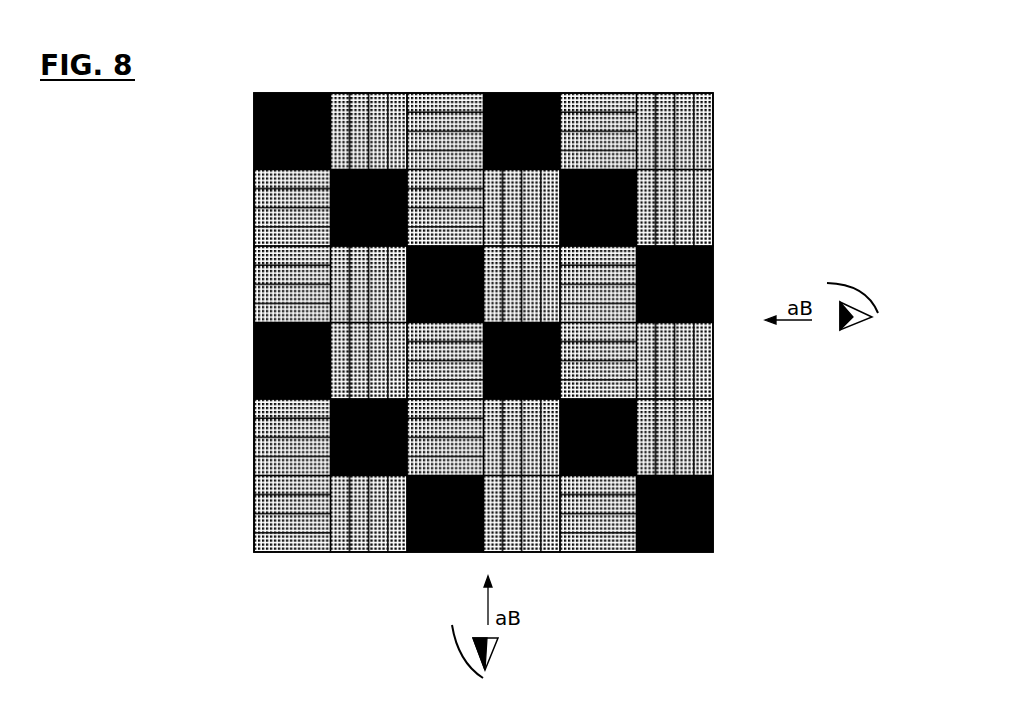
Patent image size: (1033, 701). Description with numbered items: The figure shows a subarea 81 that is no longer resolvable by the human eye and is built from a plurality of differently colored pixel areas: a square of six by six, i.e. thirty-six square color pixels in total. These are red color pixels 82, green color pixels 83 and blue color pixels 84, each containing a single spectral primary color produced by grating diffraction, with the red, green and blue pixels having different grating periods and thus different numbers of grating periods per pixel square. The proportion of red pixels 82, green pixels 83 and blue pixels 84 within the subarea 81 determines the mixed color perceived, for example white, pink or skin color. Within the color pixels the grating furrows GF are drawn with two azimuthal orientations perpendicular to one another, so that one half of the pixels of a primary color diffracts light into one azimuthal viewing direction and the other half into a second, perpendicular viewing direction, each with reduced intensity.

The subarea 81 is at (498, 276).
The red color pixel 82 is at (288, 96).
The green color pixel 83 is at (356, 97).
The blue color pixel 84 is at (434, 120).
The grating furrows GF is at (290, 458).